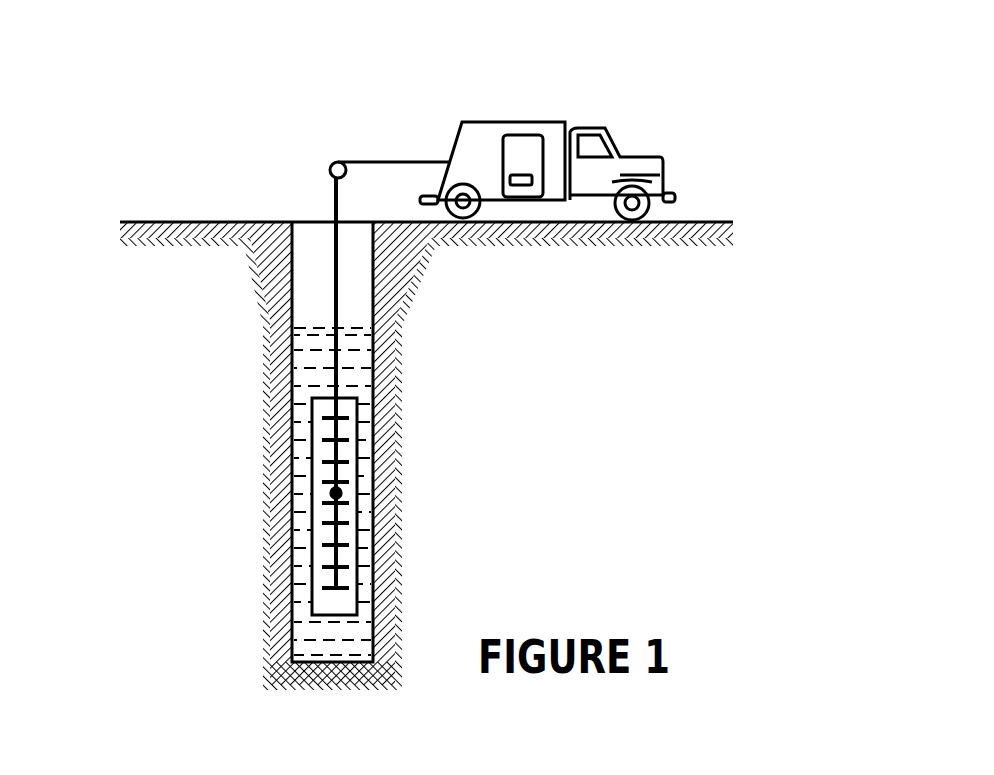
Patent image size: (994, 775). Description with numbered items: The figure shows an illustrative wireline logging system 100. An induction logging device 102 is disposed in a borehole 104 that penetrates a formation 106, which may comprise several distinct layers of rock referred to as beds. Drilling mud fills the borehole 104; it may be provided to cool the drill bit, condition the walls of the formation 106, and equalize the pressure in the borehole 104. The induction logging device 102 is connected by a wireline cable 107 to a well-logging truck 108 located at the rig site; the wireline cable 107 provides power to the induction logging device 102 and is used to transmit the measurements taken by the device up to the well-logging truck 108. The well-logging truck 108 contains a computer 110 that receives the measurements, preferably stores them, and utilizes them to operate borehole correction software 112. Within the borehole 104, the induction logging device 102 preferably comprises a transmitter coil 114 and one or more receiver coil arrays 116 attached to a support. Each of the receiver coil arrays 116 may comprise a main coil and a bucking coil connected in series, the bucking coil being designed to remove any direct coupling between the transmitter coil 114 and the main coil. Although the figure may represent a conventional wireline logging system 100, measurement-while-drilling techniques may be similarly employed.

The wireline logging system 100 is at (198, 73).
The induction logging device 102 is at (360, 452).
The borehole 104 is at (376, 580).
The formation 106 is at (411, 300).
The wireline cable 107 is at (307, 643).
The well-logging truck 108 is at (622, 150).
The computer 110 is at (513, 137).
The borehole correction software 112 is at (533, 188).
The transmitter coil 114 is at (303, 518).
The receiver coil arrays 116 is at (322, 482).